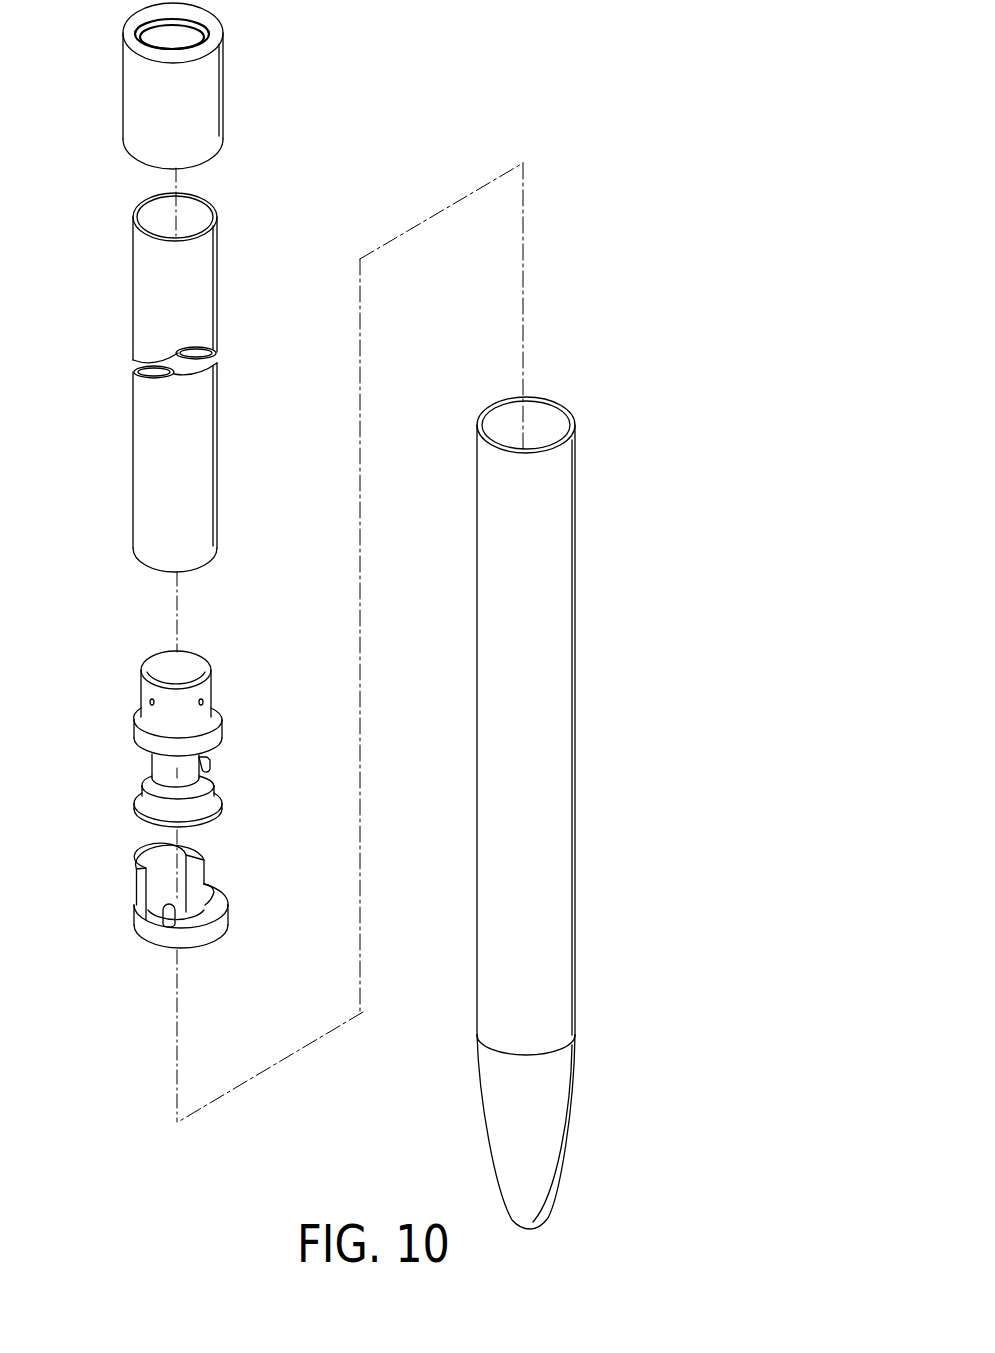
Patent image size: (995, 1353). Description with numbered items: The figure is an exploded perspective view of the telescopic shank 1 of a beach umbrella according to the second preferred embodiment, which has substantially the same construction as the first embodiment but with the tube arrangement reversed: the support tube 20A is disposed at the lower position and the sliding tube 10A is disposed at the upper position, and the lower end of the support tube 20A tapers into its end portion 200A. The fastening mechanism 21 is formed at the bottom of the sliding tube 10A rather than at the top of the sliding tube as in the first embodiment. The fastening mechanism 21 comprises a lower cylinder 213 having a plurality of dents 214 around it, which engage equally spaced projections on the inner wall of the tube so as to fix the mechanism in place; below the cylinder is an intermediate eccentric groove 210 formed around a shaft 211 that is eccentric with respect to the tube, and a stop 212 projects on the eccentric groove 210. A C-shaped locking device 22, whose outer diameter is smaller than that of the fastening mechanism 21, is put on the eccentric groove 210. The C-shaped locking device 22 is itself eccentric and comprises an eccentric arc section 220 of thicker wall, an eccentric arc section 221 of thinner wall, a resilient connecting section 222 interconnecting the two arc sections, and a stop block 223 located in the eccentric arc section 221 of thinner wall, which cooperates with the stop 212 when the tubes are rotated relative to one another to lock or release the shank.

The telescopic shank 1 is at (600, 372).
The sliding tube 10A is at (190, 305).
The support tube 20A is at (579, 813).
The tapered tip end of barrel 200A is at (552, 1098).
The fastening mechanism 21 is at (175, 735).
The eccentric groove 210 is at (150, 759).
The shaft 211 is at (162, 772).
The stop 212 is at (210, 762).
The lower cylinder 213 is at (205, 683).
The dents 214 is at (151, 707).
The C-shaped locking device 22 is at (200, 913).
The eccentric arc section of thicker wall 220 is at (187, 850).
The eccentric arc section of thinner wall 221 is at (212, 944).
The resilient connecting section 222 is at (205, 877).
The stop block 223 is at (162, 948).